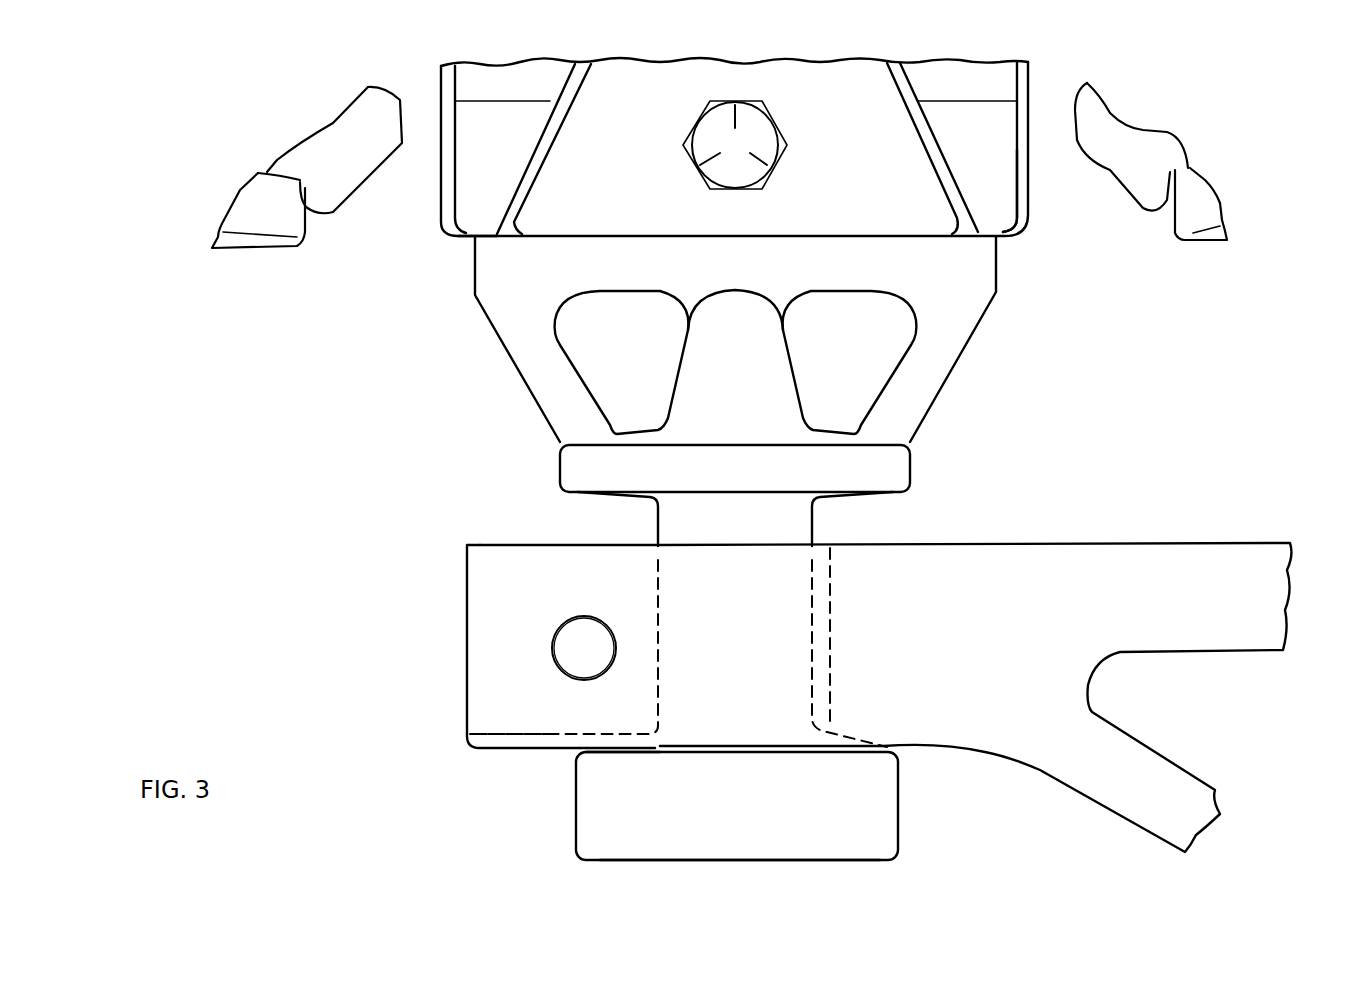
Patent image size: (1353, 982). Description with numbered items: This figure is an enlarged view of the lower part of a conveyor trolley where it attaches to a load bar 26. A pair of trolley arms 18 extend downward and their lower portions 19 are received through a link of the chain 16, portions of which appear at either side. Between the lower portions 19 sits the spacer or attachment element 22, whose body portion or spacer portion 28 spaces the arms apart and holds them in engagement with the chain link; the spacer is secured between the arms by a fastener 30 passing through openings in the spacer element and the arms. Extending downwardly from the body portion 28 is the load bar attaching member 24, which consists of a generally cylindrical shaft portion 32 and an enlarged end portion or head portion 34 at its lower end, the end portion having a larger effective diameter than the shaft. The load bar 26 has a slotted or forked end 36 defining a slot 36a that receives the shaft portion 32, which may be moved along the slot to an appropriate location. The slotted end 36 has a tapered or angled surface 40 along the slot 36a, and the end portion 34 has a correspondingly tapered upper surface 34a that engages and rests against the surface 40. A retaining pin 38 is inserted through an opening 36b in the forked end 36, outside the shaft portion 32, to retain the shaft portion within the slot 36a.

The chain 16 is at (258, 185).
The trolley arm 18 is at (1030, 78).
The lower portion 19 is at (997, 185).
The spacer or attachment element 22 is at (460, 332).
The load bar attaching member 24 is at (555, 862).
The load bar 26 is at (1118, 560).
The body portion or spacer portion 28 is at (473, 238).
The fastener 30 is at (762, 133).
The shaft portion 32 is at (812, 612).
The end portion or head portion 34 is at (733, 848).
The tapered or angled upper surface 34a is at (615, 745).
The slotted or forked end 36 is at (507, 556).
The slot 36a is at (830, 652).
The opening 36b is at (558, 628).
The retaining pin 38 is at (570, 650).
The tapered or angled surface 40 is at (507, 736).